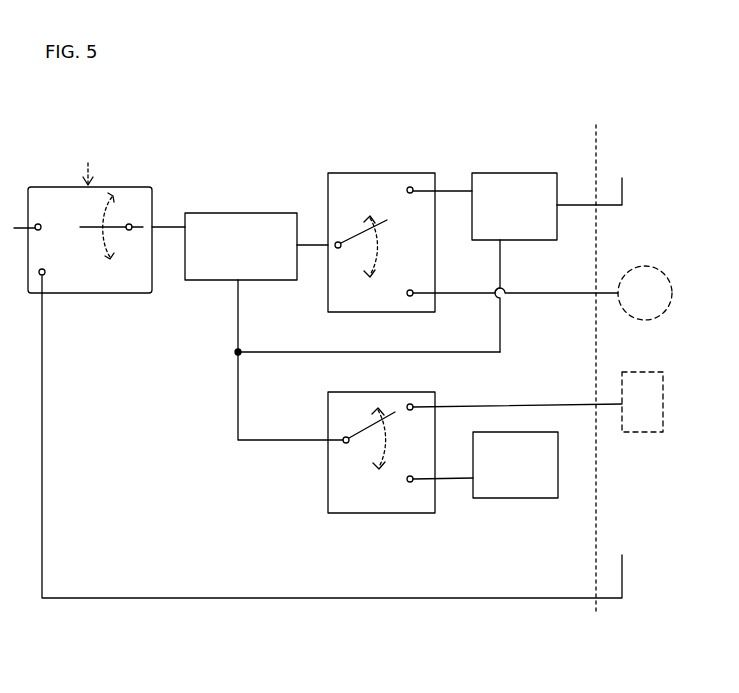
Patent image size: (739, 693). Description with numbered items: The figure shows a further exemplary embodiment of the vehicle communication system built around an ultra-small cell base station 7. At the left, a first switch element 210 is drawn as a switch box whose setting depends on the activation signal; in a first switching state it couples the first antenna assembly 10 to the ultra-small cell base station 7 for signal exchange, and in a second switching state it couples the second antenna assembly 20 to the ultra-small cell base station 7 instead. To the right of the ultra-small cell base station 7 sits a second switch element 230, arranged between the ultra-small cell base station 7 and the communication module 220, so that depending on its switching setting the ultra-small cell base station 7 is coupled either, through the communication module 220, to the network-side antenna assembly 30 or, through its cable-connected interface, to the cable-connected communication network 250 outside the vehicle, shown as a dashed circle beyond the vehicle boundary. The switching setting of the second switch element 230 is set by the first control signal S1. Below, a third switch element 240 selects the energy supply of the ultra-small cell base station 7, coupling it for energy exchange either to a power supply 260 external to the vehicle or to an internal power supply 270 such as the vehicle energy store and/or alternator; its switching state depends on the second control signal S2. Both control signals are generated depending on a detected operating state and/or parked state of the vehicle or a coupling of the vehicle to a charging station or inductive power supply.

The first antenna assembly 10 is at (14, 228).
The first switch element 210 is at (127, 187).
The ultra-small cell base station 7 is at (232, 213).
The second switch element 230 is at (381, 206).
The communication module 220 is at (512, 173).
The network-side antenna assembly 30 is at (622, 178).
The cable-connected communication network 250 is at (655, 266).
The third switch element 240 is at (381, 451).
The power supply external to the vehicle 260 is at (656, 432).
The internal power supply 270 is at (513, 498).
The second antenna assembly 20 is at (622, 555).
The first control signal S1 is at (372, 170).
The second control signal S2 is at (380, 516).